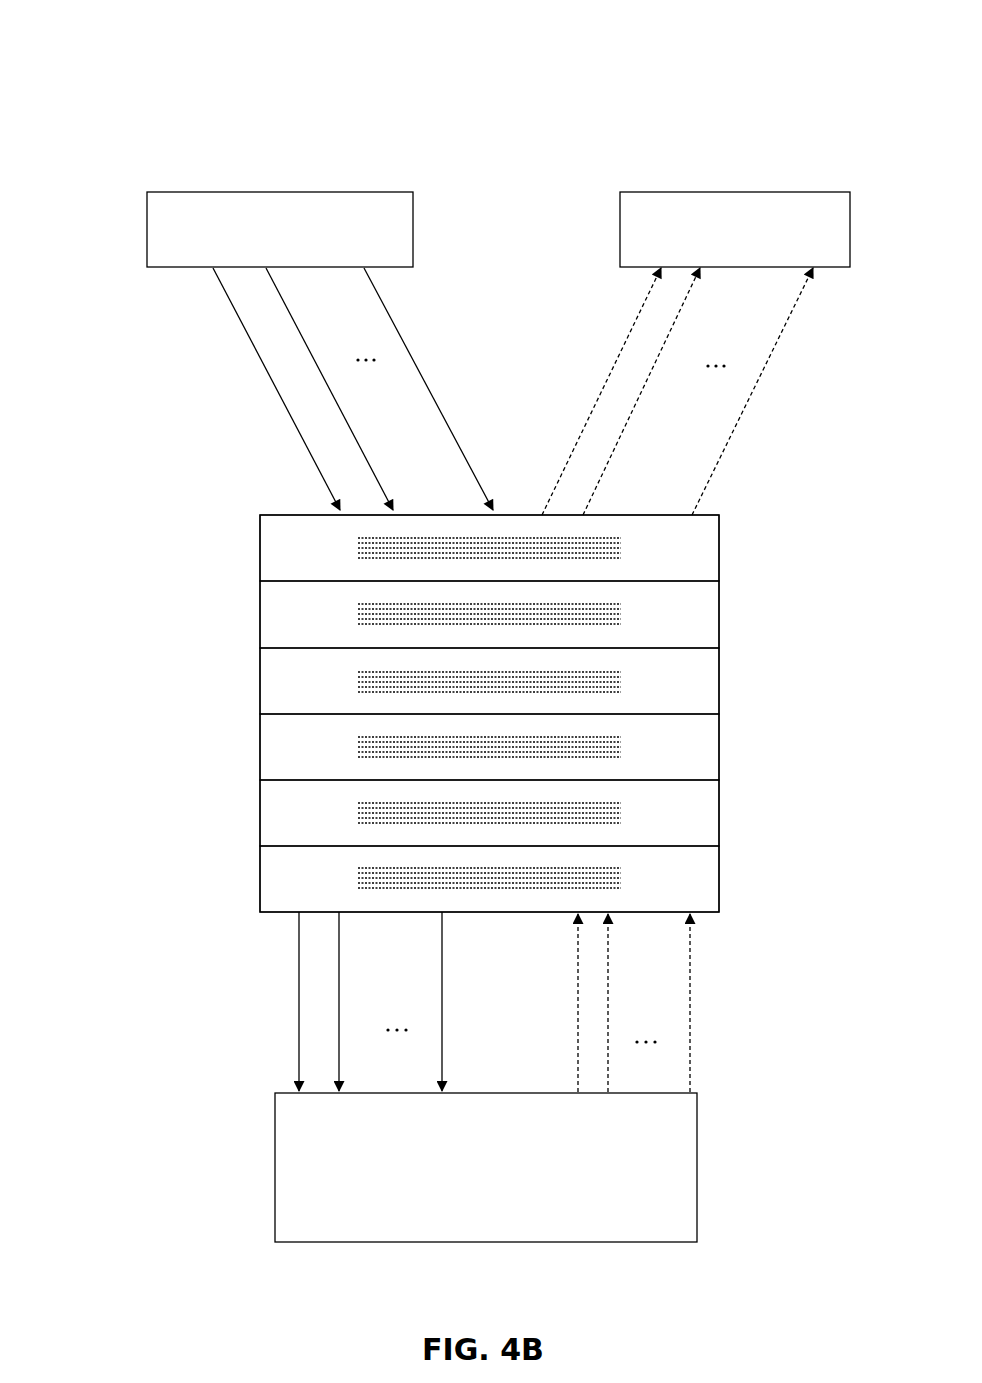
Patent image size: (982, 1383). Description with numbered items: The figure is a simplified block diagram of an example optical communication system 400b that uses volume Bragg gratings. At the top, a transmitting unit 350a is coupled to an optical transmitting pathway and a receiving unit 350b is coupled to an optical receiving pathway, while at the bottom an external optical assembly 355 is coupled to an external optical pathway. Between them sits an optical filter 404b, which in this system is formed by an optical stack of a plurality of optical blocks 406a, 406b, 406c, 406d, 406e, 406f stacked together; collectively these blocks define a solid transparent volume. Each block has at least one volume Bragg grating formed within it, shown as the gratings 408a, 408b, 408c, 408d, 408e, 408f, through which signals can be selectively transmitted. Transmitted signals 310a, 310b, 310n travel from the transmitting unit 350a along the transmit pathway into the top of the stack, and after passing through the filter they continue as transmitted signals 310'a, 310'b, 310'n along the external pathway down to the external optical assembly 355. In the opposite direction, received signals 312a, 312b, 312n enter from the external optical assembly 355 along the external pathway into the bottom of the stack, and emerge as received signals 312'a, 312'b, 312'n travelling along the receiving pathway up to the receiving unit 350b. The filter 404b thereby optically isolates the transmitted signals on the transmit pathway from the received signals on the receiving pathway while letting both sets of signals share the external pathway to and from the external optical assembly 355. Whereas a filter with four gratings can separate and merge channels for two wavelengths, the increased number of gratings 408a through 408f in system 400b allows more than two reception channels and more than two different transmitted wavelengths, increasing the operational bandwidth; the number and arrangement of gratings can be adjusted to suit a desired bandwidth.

The optical communication system 400b is at (112, 47).
The transmitting unit 350a is at (230, 192).
The receiving unit 350b is at (808, 192).
The transmitted signal 310a is at (272, 383).
The transmitted signal 310b is at (338, 405).
The transmitted signal 310n is at (452, 436).
The received signal 312'a is at (584, 391).
The received signal 312'b is at (662, 391).
The received signal 312'n is at (769, 391).
The optical filter 404b is at (258, 516).
The optical block 406a is at (708, 557).
The optical block 406b is at (708, 623).
The optical block 406c is at (708, 690).
The optical block 406d is at (708, 756).
The optical block 406e is at (708, 822).
The optical block 406f is at (708, 888).
The volume Bragg grating 408a is at (355, 558).
The volume Bragg grating 408b is at (355, 617).
The volume Bragg grating 408c is at (355, 678).
The volume Bragg grating 408d is at (355, 748).
The volume Bragg grating 408e is at (355, 815).
The volume Bragg grating 408f is at (355, 880).
The transmitted signal 310'a is at (256, 1001).
The transmitted signal 310'b is at (383, 1001).
The transmitted signal 310'n is at (485, 1001).
The received signal 312a is at (575, 963).
The received signal 312b is at (612, 968).
The received signal 312n is at (694, 979).
The external optical assembly 355 is at (486, 1167).